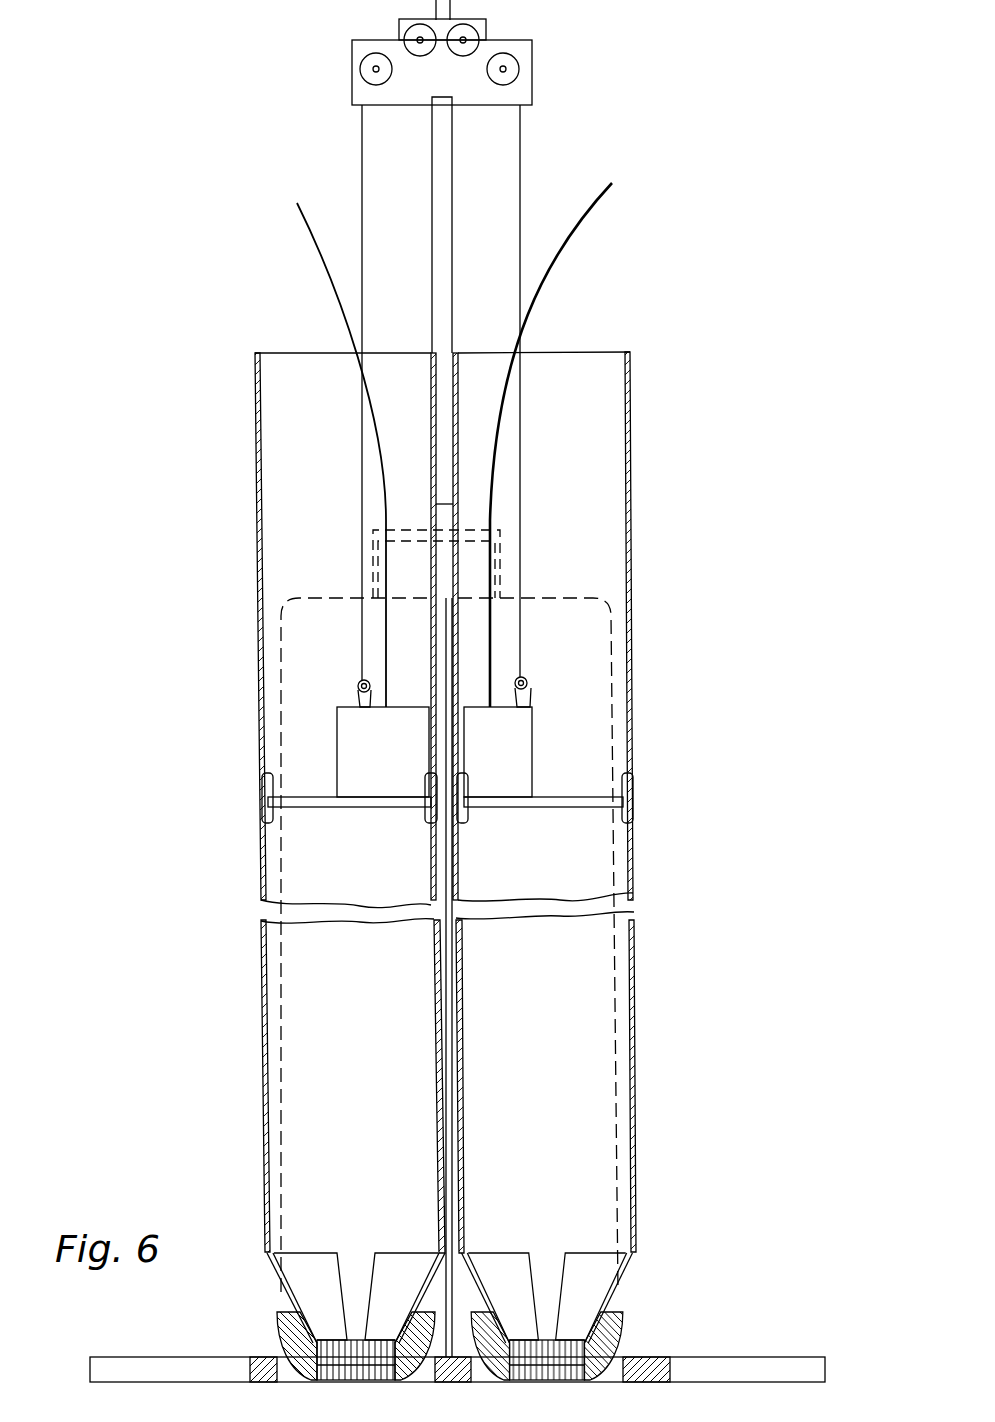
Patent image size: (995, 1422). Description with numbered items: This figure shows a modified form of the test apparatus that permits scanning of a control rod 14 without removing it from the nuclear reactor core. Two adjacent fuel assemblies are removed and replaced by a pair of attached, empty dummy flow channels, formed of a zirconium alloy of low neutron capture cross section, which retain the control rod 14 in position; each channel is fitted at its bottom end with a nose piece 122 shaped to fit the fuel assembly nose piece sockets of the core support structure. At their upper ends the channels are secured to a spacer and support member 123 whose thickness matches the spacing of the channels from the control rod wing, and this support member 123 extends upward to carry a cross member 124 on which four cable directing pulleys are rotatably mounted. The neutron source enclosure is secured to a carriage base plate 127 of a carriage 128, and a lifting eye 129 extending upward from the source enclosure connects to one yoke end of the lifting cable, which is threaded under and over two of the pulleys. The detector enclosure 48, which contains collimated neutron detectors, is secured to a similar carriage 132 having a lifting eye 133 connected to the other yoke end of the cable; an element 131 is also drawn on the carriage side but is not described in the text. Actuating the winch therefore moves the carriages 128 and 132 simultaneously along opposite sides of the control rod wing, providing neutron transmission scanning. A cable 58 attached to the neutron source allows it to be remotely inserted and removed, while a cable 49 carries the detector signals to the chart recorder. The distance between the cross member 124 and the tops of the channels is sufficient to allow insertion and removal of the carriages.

The cross member 124 is at (485, 47).
The spacer and support member 123 is at (452, 152).
The cable 49 is at (600, 203).
The cable 58 is at (312, 225).
The lifting eye 129 is at (358, 685).
The lifting eye 133 is at (530, 684).
The carriage 128 is at (328, 752).
The detector enclosure 48 is at (533, 726).
The clip 131 is at (265, 788).
The carriage 132 is at (572, 792).
The carriage base plate 127 is at (310, 808).
The control rod 14 is at (458, 992).
The nose piece 122 is at (623, 1287).